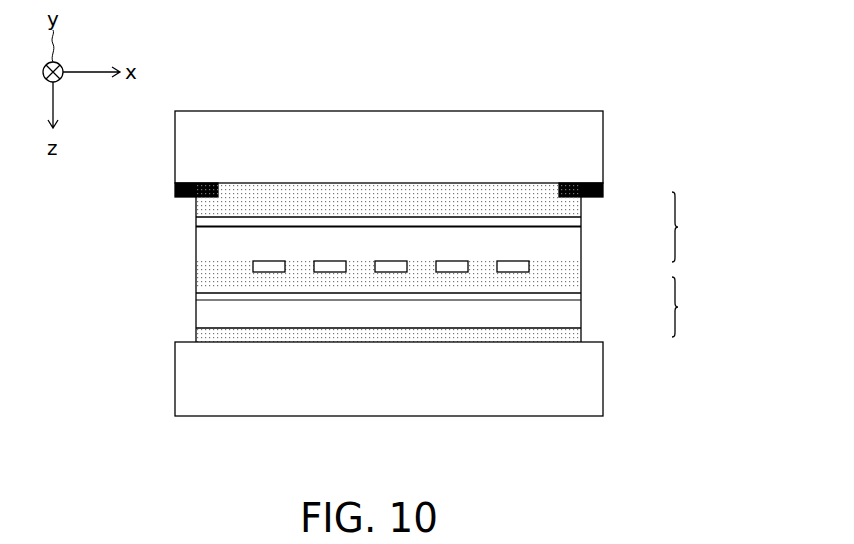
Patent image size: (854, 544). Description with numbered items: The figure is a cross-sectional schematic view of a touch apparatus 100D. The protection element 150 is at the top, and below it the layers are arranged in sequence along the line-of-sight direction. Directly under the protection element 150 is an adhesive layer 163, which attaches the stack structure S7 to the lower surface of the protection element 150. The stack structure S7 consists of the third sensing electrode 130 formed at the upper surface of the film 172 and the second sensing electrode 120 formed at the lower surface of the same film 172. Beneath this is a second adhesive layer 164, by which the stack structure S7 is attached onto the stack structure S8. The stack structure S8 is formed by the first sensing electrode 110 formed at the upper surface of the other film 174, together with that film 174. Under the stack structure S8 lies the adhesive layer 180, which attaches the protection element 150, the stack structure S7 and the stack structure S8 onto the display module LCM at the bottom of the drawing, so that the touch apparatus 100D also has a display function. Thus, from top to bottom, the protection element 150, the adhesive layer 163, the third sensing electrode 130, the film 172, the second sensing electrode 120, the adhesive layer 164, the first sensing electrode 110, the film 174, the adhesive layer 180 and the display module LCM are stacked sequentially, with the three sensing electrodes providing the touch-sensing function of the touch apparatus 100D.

The protection element 150 is at (592, 136).
The adhesive layer 163 is at (196, 208).
The third sensing electrode 130 is at (575, 223).
The film 172 is at (572, 243).
The adhesive layer 164 is at (196, 282).
The second sensing electrode 120 is at (558, 270).
The first sensing electrode 110 is at (572, 297).
The film 174 is at (575, 315).
The adhesive layer 180 is at (196, 337).
The display module LCM is at (592, 371).
The stack structure S7 is at (693, 227).
The stack structure S8 is at (693, 307).
The touch apparatus 100D is at (725, 428).